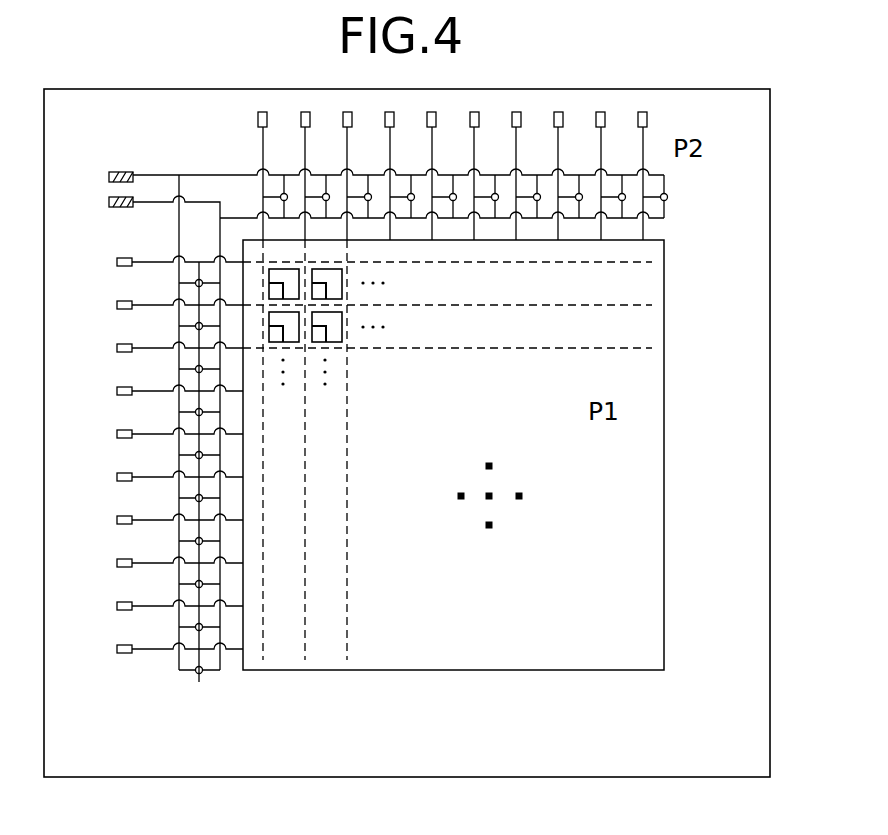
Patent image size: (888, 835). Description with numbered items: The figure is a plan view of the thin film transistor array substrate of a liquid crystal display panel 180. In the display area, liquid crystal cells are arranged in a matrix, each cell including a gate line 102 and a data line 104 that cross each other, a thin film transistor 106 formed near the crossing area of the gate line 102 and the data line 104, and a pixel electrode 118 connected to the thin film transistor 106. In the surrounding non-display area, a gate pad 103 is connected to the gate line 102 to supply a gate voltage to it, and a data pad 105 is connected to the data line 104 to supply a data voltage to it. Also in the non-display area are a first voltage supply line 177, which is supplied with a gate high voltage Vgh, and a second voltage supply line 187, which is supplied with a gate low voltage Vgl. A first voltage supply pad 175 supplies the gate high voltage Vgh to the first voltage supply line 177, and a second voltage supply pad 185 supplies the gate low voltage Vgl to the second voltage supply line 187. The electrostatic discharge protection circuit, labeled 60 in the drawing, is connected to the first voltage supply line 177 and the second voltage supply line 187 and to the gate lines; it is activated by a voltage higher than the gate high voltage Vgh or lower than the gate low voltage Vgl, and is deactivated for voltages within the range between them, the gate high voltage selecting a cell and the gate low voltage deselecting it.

The gate driving circuit 60 is at (199, 682).
The gate line 102 is at (620, 262).
The gate pad 103 is at (117, 262).
The data line 104 is at (348, 410).
The data pad 105 is at (257, 119).
The thin film transistor 106 is at (337, 341).
The pixel electrode 118 is at (344, 318).
The first voltage supply pad 175 is at (109, 177).
The first voltage supply line 177 is at (242, 175).
The liquid crystal display panel 180 is at (770, 432).
The second voltage supply pad 185 is at (109, 202).
The second voltage supply line 187 is at (193, 200).